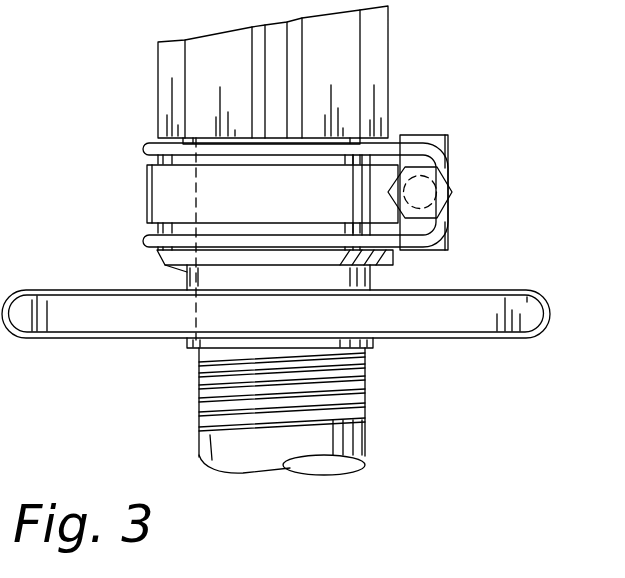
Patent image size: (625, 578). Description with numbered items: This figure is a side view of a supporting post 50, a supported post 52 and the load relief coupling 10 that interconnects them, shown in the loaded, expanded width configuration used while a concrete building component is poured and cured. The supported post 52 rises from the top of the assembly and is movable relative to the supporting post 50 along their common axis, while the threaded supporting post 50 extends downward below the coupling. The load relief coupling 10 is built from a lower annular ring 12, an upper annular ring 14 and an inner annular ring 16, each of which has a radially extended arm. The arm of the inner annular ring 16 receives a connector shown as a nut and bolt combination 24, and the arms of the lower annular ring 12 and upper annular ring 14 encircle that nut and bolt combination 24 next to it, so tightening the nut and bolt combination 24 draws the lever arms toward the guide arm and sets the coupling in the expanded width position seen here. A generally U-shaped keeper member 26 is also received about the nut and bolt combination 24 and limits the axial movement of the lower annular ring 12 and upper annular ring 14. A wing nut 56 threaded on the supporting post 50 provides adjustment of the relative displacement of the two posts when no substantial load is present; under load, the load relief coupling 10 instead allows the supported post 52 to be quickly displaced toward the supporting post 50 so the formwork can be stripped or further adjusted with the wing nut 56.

The load relief coupling 10 is at (443, 100).
The lower annular ring 12 is at (148, 242).
The upper annular ring 14 is at (148, 143).
The inner annular ring 16 is at (172, 192).
The nut and bolt combination 24 is at (432, 193).
The keeper member 26 is at (448, 240).
The supporting post 50 is at (353, 440).
The supported post 52 is at (353, 70).
The wing nut 56 is at (130, 328).